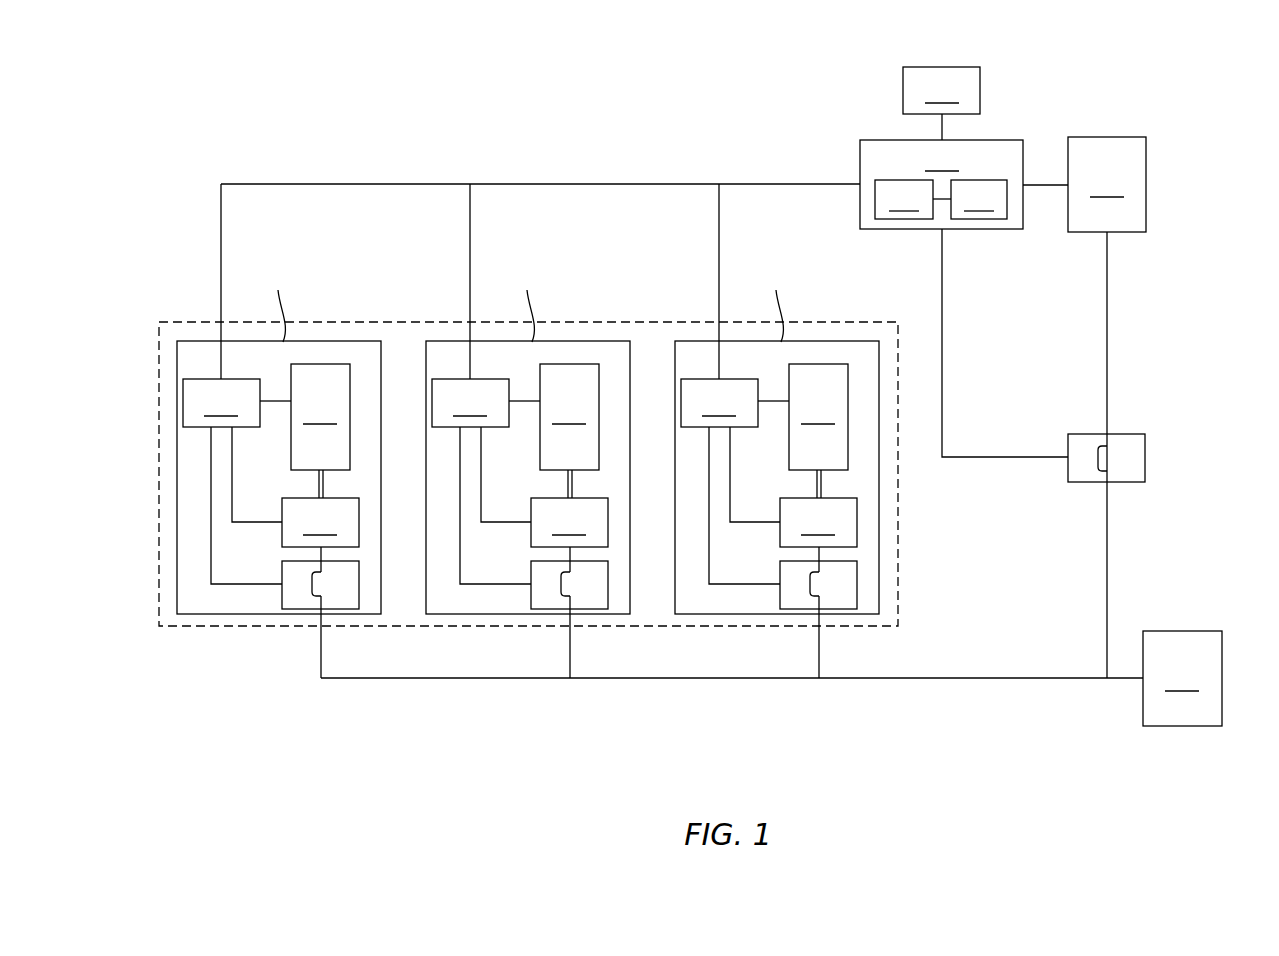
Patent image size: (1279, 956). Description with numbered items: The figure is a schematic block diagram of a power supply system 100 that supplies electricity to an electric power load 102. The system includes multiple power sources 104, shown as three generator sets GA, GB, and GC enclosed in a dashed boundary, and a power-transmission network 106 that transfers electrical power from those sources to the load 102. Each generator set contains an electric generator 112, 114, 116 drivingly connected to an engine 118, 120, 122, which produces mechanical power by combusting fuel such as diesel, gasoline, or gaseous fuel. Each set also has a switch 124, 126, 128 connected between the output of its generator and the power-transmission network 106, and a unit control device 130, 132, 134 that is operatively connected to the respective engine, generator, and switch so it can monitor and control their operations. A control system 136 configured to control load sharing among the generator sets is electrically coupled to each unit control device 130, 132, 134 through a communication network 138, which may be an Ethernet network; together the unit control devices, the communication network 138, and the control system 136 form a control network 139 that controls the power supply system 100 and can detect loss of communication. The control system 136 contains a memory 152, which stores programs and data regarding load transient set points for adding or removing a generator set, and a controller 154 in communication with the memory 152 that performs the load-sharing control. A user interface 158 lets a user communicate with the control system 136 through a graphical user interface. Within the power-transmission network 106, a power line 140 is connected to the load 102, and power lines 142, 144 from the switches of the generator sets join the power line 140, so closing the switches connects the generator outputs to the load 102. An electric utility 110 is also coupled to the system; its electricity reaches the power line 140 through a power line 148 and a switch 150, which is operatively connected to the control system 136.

The power supply system 100 is at (1170, 118).
The electric power load 102 is at (1182, 678).
The multiple power sources 104 is at (192, 322).
The power-transmission network 106 is at (1102, 626).
The electric utility 110 is at (1107, 184).
The electric generator 112 is at (320, 522).
The electric generator 114 is at (569, 522).
The electric generator 116 is at (818, 522).
The engine 118 is at (320, 417).
The engine 120 is at (569, 417).
The engine 122 is at (818, 417).
The switch 124 is at (293, 609).
The switch 126 is at (542, 609).
The switch 128 is at (791, 609).
The unit control device 130 is at (221, 403).
The unit control device 132 is at (470, 403).
The unit control device 134 is at (719, 403).
The control system 136 is at (941, 184).
The communication network 138 is at (403, 183).
The control network 139 is at (834, 157).
The power line 140 is at (683, 679).
The power line 142 is at (321, 662).
The power line 144 is at (570, 662).
The power line 148 is at (1107, 549).
The switch 150 is at (1078, 482).
The memory 152 is at (979, 199).
The controller 154 is at (904, 199).
The user interface 158 is at (941, 90).